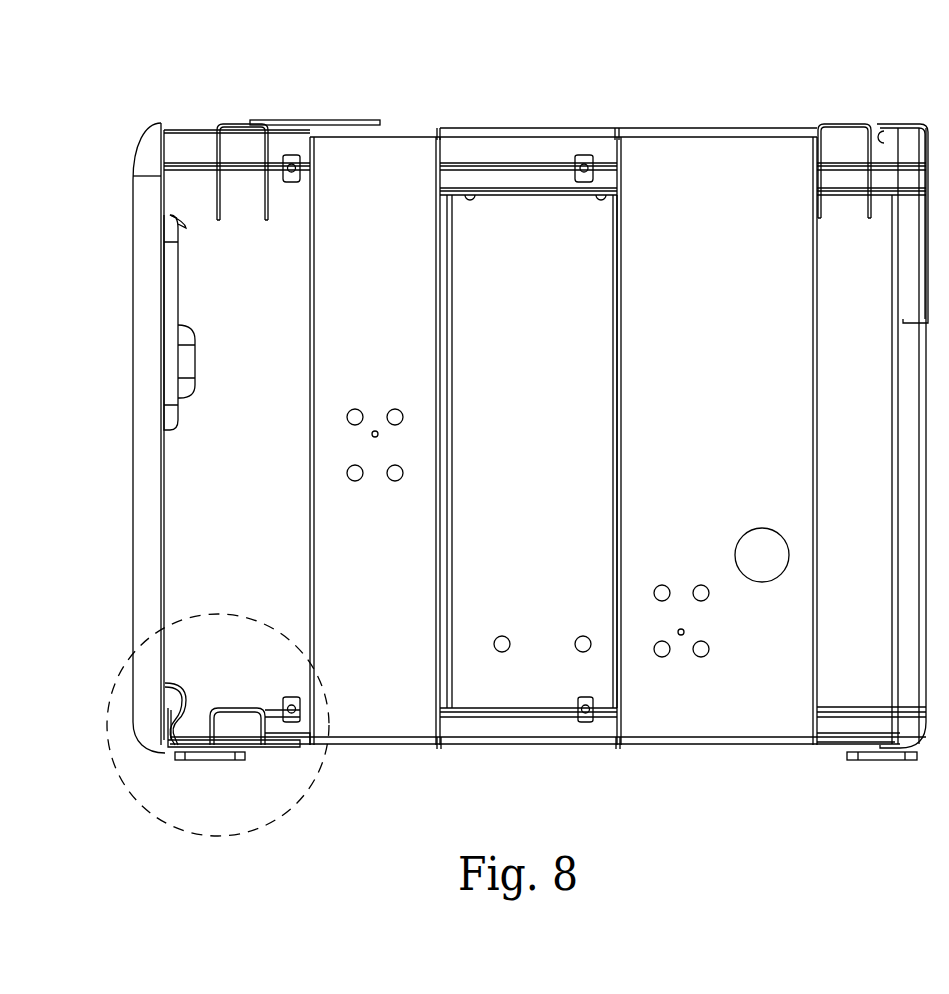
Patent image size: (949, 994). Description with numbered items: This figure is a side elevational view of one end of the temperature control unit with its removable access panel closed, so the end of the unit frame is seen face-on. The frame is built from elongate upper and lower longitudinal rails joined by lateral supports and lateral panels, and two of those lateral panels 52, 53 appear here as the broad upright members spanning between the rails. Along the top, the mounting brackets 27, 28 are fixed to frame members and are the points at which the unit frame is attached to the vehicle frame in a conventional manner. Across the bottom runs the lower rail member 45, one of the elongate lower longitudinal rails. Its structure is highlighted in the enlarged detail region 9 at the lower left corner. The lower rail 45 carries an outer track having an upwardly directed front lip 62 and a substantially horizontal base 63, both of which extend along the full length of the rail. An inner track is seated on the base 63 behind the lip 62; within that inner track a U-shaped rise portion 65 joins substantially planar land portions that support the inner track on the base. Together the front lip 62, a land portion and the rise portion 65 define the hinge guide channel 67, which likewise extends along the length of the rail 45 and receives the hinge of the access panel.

The detail region circle 9 is at (156, 820).
The mounting bracket 27 is at (236, 124).
The mounting bracket 28 is at (848, 124).
The lower rail member 45 is at (210, 672).
The lateral panel 52 is at (700, 422).
The lateral panel 53 is at (361, 550).
The front lip 62 is at (170, 724).
The base 63 is at (258, 747).
The rise portion 65 is at (238, 708).
The hinge guide channel 67 is at (210, 747).